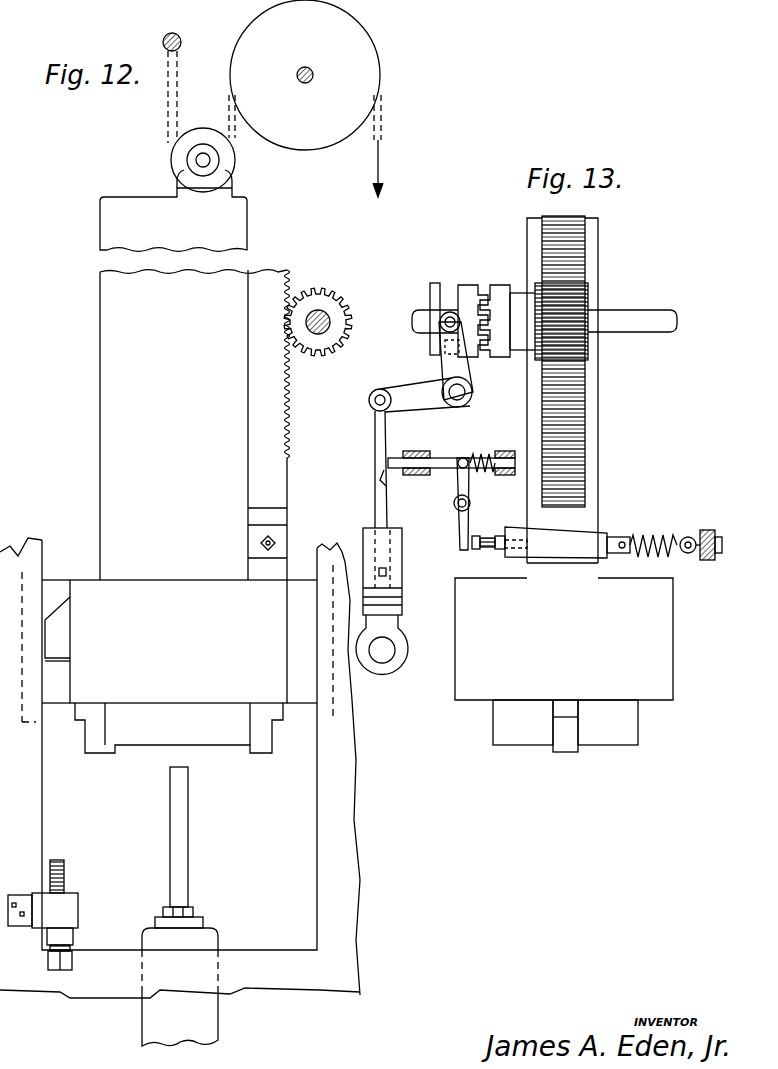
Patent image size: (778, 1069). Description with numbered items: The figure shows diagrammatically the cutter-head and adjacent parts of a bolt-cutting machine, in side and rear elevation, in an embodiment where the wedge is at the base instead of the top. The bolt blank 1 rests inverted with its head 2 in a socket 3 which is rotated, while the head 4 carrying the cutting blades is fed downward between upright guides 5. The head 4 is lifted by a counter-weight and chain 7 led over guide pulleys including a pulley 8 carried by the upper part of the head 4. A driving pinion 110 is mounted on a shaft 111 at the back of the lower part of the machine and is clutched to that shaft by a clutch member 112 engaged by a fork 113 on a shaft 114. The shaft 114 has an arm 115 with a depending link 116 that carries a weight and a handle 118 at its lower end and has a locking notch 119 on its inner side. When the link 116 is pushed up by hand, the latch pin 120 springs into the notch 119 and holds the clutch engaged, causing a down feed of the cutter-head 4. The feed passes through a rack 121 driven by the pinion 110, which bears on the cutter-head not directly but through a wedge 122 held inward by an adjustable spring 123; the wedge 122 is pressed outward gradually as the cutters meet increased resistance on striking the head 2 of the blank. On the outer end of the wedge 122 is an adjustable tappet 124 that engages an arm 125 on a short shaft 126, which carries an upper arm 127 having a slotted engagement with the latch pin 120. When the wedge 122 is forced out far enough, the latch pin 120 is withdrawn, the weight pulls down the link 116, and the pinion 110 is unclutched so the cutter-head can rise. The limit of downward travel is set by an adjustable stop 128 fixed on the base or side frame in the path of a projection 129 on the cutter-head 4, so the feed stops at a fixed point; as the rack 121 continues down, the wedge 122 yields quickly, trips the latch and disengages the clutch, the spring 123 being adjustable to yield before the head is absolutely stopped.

In FIG. 12, the bolt blank 1 is at (190, 850).
In FIG. 12, the head 2 is at (196, 908).
In FIG. 12, the socket 3 is at (218, 934).
In FIG. 12, the head 4 is at (179, 666).
In FIG. 13, the head 4 is at (564, 665).
In FIG. 12, the upright guides 5 is at (180, 768).
In FIG. 12, the chain 7 is at (384, 113).
In FIG. 12, the pulley 8 is at (196, 130).
In FIG. 12, the driving pinion 110 is at (350, 308).
In FIG. 13, the driving pinion 110 is at (575, 297).
In FIG. 12, the shaft 111 is at (318, 312).
In FIG. 13, the shaft 111 is at (643, 325).
In FIG. 13, the clutch member 112 is at (472, 290).
In FIG. 13, the fork 113 is at (448, 368).
In FIG. 13, the shaft 114 is at (465, 397).
In FIG. 13, the arm 115 is at (419, 395).
In FIG. 13, the depending link 116 is at (376, 443).
In FIG. 13, the handle 118 is at (385, 672).
In FIG. 13, the locking notch 119 is at (388, 483).
In FIG. 13, the latch pin 120 is at (446, 458).
In FIG. 13, the rack 121 is at (578, 418).
In FIG. 12, the wedge 122 is at (290, 543).
In FIG. 13, the wedge 122 is at (567, 542).
In FIG. 13, the adjustable spring 123 is at (648, 541).
In FIG. 12, the adjustable tappet 124 is at (262, 543).
In FIG. 13, the adjustable tappet 124 is at (493, 540).
In FIG. 13, the arm 125 is at (470, 541).
In FIG. 13, the short shaft 126 is at (470, 504).
In FIG. 13, the upper arm 127 is at (455, 486).
In FIG. 12, the adjustable stop 128 is at (72, 853).
In FIG. 12, the projection 129 is at (55, 643).